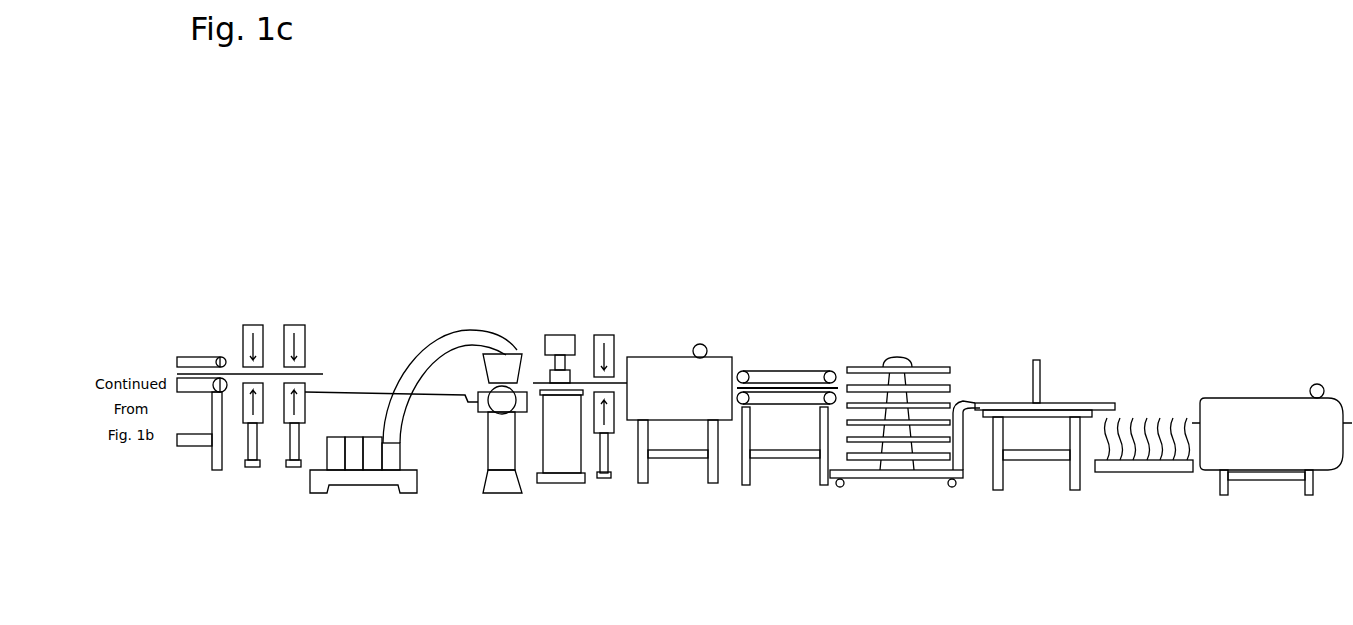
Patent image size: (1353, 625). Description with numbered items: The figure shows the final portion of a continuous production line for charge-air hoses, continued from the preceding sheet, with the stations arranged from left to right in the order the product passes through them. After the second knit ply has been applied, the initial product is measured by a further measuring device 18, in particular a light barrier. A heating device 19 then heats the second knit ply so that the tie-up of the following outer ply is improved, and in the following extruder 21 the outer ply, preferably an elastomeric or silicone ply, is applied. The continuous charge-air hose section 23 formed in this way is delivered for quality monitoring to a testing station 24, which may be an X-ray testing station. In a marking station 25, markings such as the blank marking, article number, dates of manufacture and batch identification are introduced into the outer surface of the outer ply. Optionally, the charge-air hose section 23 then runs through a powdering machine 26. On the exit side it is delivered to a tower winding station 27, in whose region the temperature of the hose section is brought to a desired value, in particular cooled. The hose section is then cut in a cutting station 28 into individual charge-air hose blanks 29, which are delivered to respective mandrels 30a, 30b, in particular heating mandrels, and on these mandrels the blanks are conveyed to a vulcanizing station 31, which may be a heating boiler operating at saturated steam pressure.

The measuring device 18 is at (262, 306).
The heating device 19 is at (302, 306).
The extruder 21 is at (517, 333).
The charge-air hose section 23 is at (528, 403).
The testing station 24 is at (569, 316).
The marking station 25 is at (607, 316).
The powdering machine 26 is at (681, 333).
The tower winding station 27 is at (901, 339).
The cutting station 28 is at (1042, 343).
The charge-air hose blanks 29 is at (1067, 404).
The mandrel 30a is at (1110, 472).
The mandrel 30b is at (1123, 447).
The vulcanizing station 31 is at (1266, 376).